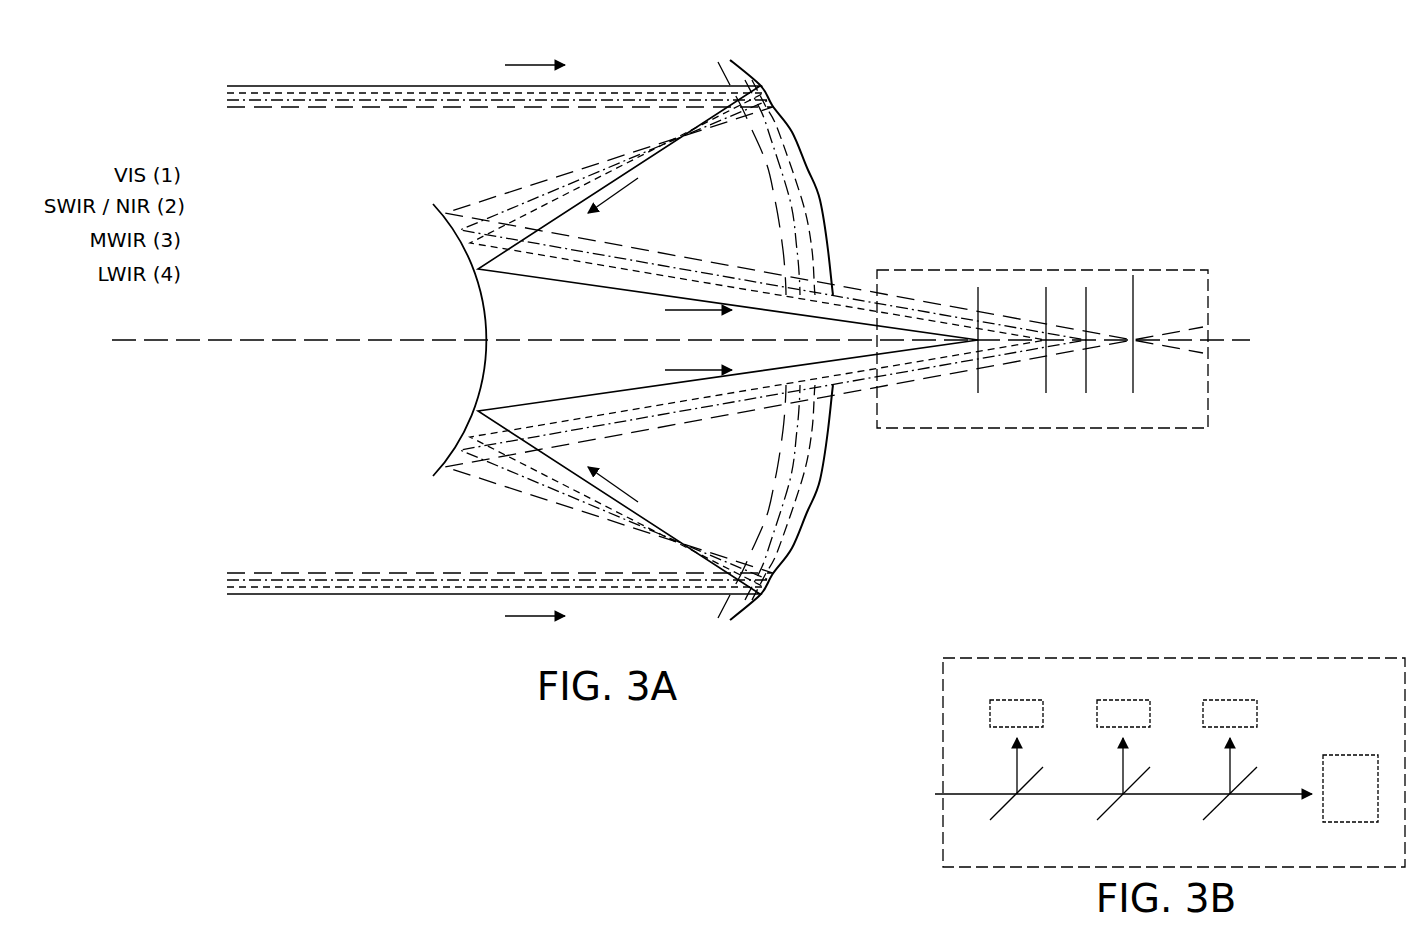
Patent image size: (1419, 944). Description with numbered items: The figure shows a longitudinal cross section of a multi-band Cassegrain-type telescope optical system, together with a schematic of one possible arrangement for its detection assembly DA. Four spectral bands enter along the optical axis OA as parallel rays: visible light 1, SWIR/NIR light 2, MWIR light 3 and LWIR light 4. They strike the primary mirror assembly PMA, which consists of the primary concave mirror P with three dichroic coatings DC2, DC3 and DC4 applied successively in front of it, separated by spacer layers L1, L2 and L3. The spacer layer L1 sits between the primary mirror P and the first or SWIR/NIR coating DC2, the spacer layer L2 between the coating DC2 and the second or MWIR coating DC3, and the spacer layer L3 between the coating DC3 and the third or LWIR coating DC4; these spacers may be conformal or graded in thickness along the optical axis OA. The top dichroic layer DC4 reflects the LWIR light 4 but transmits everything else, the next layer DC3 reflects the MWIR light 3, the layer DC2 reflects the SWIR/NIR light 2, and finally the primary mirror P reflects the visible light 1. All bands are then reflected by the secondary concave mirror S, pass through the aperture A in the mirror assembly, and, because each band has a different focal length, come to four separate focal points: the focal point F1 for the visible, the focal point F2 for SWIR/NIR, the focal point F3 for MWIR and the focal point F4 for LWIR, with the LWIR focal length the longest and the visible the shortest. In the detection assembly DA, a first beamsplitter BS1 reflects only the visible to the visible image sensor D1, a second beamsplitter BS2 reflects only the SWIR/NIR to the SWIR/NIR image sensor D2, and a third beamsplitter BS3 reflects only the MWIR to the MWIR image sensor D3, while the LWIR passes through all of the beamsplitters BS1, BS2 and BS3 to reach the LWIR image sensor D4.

In FIG. 3A, the visible light 1 is at (259, 84).
In FIG. 3A, the SWIR/NIR light 2 is at (309, 91).
In FIG. 3A, the MWIR light 3 is at (368, 102).
In FIG. 3A, the LWIR light 4 is at (320, 109).
In FIG. 3A, the optical axis OA is at (213, 337).
In FIG. 3A, the secondary concave mirror S is at (488, 308).
In FIG. 3A, the primary concave mirror P is at (828, 238).
In FIG. 3A, the primary mirror assembly PMA is at (700, 60).
In FIG. 3A, the spacer layer L1 is at (772, 106).
In FIG. 3A, the spacer layer L2 is at (789, 173).
In FIG. 3A, the spacer layer L3 is at (784, 221).
In FIG. 3A, the dichroic coating DC2 is at (804, 207).
In FIG. 3A, the dichroic coating DC3 is at (774, 143).
In FIG. 3A, the dichroic coating DC4 is at (772, 191).
In FIG. 3A, the aperture A is at (888, 266).
In FIG. 3A, the detection assembly DA is at (1088, 270).
In FIG. 3B, the detection assembly DA is at (1137, 668).
In FIG. 3A, the focal point F1 is at (978, 380).
In FIG. 3A, the focal point F2 is at (1046, 380).
In FIG. 3A, the focal point F3 is at (1086, 380).
In FIG. 3A, the focal point F4 is at (1133, 380).
In FIG. 3A, the visible image sensor D1 is at (978, 296).
In FIG. 3B, the visible image sensor D1 is at (1016, 713).
In FIG. 3A, the SWIR/NIR image sensor D2 is at (1046, 296).
In FIG. 3B, the SWIR/NIR image sensor D2 is at (1123, 713).
In FIG. 3A, the MWIR image sensor D3 is at (1086, 288).
In FIG. 3B, the MWIR image sensor D3 is at (1230, 713).
In FIG. 3A, the LWIR image sensor D4 is at (1133, 275).
In FIG. 3B, the LWIR image sensor D4 is at (1350, 788).
In FIG. 3B, the first beamsplitter BS1 is at (1003, 810).
In FIG. 3B, the second beamsplitter BS2 is at (1110, 810).
In FIG. 3B, the third beamsplitter BS3 is at (1217, 810).